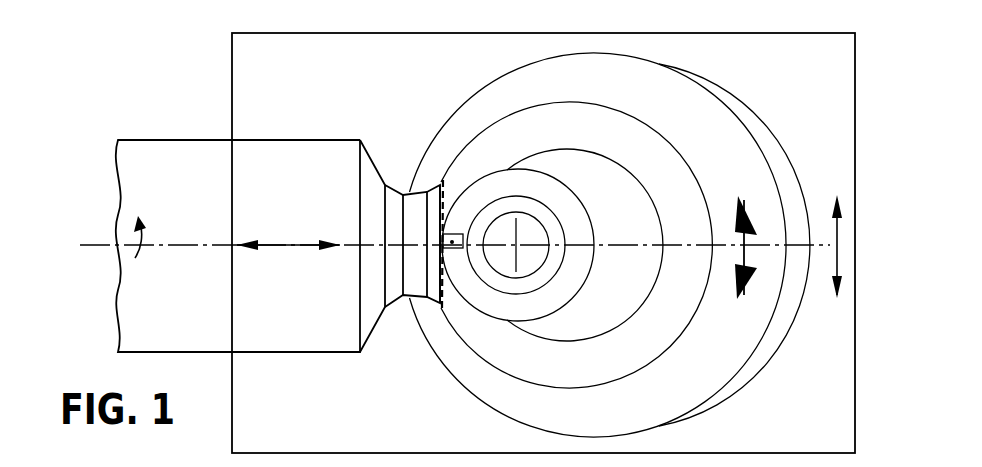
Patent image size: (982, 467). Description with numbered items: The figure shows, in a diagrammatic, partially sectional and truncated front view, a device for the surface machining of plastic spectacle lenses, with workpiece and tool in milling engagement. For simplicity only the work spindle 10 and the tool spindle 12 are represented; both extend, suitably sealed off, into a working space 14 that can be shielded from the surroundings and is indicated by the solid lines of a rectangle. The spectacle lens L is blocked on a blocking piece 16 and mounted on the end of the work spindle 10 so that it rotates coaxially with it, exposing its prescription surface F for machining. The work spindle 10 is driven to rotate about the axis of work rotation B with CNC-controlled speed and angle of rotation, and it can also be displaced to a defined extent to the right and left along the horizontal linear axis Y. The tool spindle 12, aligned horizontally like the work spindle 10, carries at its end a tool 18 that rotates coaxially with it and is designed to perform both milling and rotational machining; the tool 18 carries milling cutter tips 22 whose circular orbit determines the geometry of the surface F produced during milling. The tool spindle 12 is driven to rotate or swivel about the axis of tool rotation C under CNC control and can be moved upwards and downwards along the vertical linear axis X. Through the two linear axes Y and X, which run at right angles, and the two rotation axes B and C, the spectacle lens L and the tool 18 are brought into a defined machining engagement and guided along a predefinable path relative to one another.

The work spindle 10 is at (166, 156).
The tool spindle 12 is at (520, 365).
The working space 14 is at (232, 76).
The blocking piece 16 is at (433, 288).
The tool 18 is at (595, 233).
The milling cutter tips 22 is at (453, 252).
The spectacle lens L is at (438, 180).
The prescription surface F is at (448, 200).
The axis of work rotation B is at (147, 281).
The axis of tool rotation C is at (745, 240).
The linear axis X is at (838, 260).
The linear axis Y is at (285, 244).